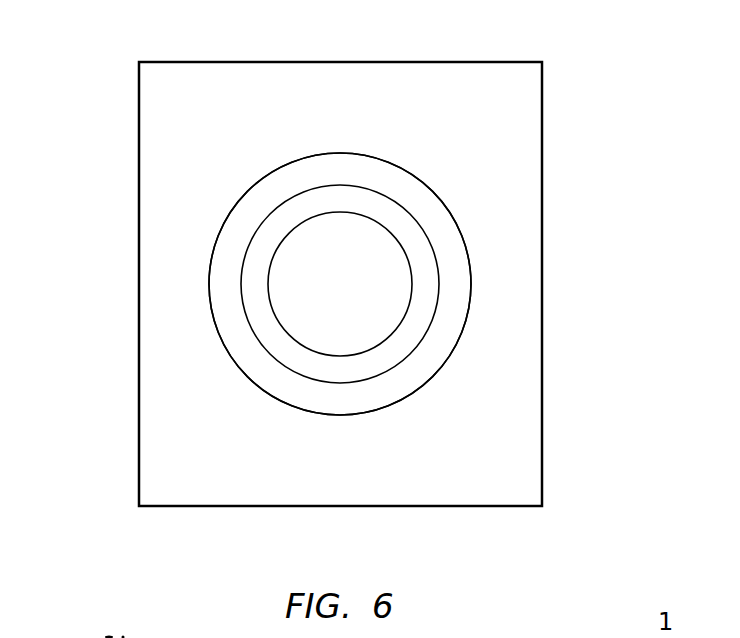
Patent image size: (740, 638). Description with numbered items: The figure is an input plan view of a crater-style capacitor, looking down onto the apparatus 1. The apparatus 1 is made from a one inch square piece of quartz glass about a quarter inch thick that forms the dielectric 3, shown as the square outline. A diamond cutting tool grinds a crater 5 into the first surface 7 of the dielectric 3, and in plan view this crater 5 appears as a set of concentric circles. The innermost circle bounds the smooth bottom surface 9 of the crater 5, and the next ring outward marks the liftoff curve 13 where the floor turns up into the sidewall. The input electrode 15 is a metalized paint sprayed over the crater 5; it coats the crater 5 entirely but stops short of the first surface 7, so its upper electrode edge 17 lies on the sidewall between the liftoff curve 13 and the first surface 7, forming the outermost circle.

The apparatus 1 is at (673, 19).
The dielectric 3 is at (139, 168).
The crater 5 is at (208, 272).
The first surface 7 is at (188, 373).
The bottom surface 9 is at (358, 355).
The liftoff curve 13 is at (425, 285).
The input electrode 15 is at (332, 253).
The upper electrode edge 17 is at (435, 350).